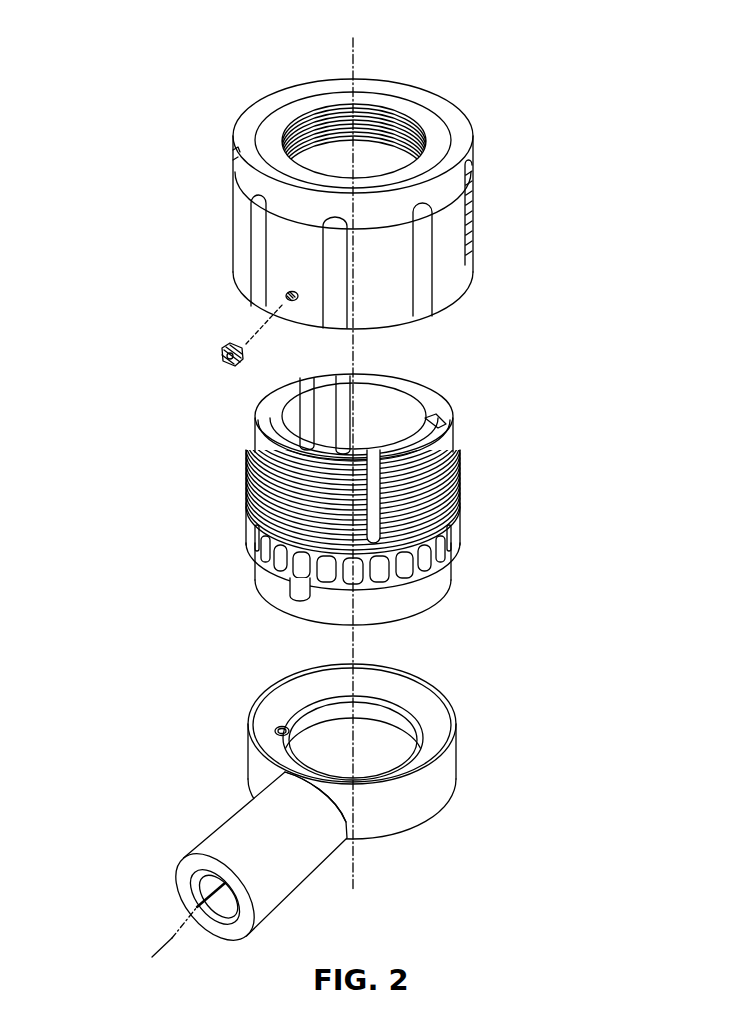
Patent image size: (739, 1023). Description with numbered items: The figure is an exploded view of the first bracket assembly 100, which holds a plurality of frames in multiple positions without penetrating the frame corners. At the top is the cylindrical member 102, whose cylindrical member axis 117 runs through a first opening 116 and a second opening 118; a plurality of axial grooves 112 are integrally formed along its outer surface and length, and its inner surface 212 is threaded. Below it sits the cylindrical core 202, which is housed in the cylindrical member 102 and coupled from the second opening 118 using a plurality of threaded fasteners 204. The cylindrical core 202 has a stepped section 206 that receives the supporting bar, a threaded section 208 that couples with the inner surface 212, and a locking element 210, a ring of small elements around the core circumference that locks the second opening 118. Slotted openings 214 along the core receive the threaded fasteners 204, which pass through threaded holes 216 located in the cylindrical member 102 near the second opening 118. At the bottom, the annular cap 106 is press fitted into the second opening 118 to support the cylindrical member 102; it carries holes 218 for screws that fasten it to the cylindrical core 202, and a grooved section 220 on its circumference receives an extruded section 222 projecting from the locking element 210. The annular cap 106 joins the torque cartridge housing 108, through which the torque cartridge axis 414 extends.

The first bracket assembly 100 is at (178, 62).
The cylindrical member 102 is at (314, 199).
The annular cap 106 is at (332, 810).
The torque cartridge housing 108 is at (305, 862).
The axial grooves 112 is at (393, 219).
The first opening 116 is at (401, 98).
The cylindrical member axis 117 is at (352, 50).
The second opening 118 is at (416, 329).
The cylindrical core 202 is at (323, 501).
The threaded fasteners 204 is at (222, 356).
The stepped section 206 is at (352, 474).
The threaded section 208 is at (458, 478).
The locking element 210 is at (466, 541).
The inner surface 212 is at (352, 130).
The slotted openings 214 is at (250, 531).
The threaded holes 216 is at (276, 301).
The holes 218 is at (258, 732).
The grooved section 220 is at (282, 775).
The extruded section 222 is at (292, 596).
The torque cartridge axis 414 is at (165, 940).